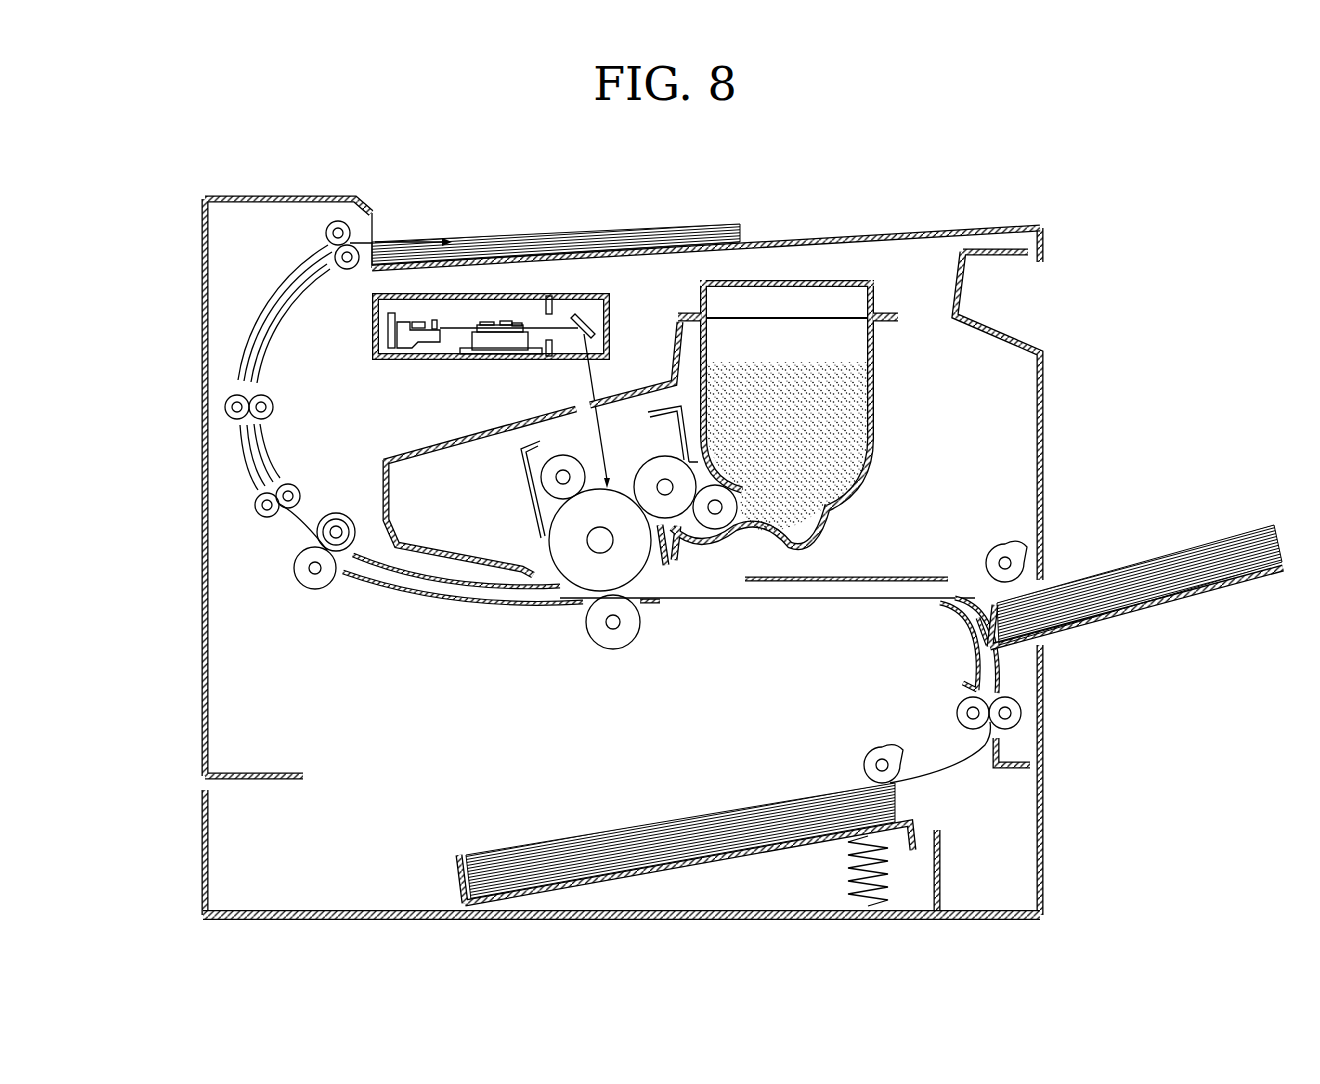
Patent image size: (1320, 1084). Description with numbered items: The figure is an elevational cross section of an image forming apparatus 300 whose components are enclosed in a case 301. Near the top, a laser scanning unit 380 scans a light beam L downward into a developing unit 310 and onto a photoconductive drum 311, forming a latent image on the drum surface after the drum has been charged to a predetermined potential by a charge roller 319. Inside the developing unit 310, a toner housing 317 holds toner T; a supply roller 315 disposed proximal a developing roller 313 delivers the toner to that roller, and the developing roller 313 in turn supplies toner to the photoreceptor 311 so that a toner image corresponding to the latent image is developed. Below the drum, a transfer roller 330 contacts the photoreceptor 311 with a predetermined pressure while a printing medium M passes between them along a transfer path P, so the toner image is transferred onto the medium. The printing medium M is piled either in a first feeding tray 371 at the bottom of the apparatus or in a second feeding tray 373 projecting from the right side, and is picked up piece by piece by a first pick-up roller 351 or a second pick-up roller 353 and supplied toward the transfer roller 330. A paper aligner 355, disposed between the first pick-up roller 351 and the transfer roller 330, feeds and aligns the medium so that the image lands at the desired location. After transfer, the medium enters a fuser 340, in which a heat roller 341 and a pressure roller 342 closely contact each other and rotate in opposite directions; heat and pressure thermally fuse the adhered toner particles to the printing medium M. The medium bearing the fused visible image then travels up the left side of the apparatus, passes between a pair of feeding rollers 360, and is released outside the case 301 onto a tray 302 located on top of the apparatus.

The image forming apparatus 300 is at (203, 190).
The case 301 is at (204, 322).
The tray 302 is at (802, 232).
The developing unit 310 is at (880, 413).
The photoconductive drum 311 is at (573, 572).
The developing roller 313 is at (657, 467).
The supply roller 315 is at (717, 522).
The toner housing 317 is at (875, 345).
The charge roller 319 is at (570, 471).
The transfer roller 330 is at (602, 640).
The fuser 340 is at (336, 600).
The heat roller 341 is at (337, 516).
The pressure roller 342 is at (315, 582).
The first pick-up roller 351 is at (860, 752).
The second pick-up roller 353 is at (1012, 547).
The paper aligner 355 is at (957, 713).
The feeding rollers 360 is at (226, 407).
The first feeding tray 371 is at (920, 846).
The second feeding tray 373 is at (1160, 603).
The laser scanning unit 380 is at (548, 283).
The light beam L is at (592, 381).
The toner T is at (860, 390).
The transfer path P is at (720, 602).
The printing medium M is at (1207, 540).